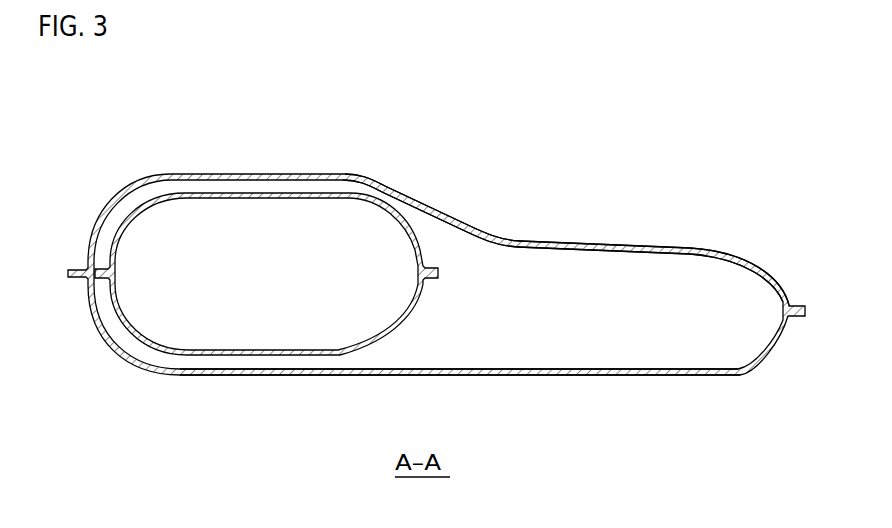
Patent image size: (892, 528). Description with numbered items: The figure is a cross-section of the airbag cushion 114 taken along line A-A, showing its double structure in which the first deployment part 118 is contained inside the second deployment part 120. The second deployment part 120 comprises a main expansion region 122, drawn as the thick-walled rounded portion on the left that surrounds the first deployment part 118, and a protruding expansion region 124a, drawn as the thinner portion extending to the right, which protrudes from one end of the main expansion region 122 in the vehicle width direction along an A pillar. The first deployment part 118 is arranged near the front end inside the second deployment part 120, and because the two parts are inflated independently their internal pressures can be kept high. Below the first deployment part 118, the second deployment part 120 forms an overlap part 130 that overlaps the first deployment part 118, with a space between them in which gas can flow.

The airbag cushion 114 is at (143, 136).
The first deployment part 118 is at (218, 192).
The second deployment part 120 is at (440, 213).
The main expansion region 122 is at (302, 173).
The protruding expansion region 124a is at (630, 243).
The overlap part 130 is at (262, 371).